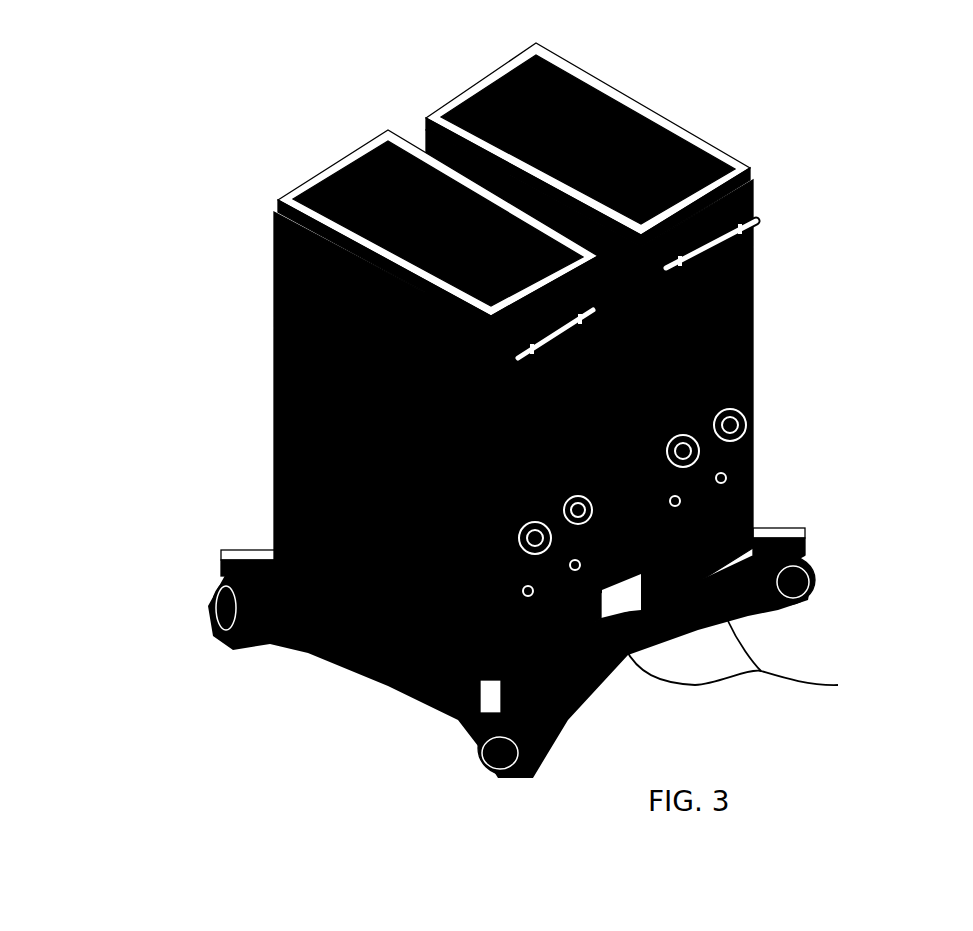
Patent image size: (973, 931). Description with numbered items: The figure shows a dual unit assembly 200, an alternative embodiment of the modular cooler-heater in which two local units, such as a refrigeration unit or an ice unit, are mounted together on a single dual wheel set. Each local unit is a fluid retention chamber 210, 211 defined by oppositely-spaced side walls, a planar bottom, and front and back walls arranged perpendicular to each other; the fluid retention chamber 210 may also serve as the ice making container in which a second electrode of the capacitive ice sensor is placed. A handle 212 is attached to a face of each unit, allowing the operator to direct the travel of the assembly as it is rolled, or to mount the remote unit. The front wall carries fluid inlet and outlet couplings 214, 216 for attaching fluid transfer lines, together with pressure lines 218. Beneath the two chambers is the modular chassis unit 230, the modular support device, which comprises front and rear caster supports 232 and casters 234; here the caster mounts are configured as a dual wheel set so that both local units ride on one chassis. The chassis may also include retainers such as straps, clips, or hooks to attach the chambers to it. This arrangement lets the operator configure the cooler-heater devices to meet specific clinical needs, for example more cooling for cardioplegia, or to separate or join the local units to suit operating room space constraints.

The dual unit assembly 200 is at (504, 406).
The fluid retention chamber 210 is at (345, 165).
The fluid retention chamber 211 is at (695, 326).
The handle 212 is at (745, 235).
The fluid inlet coupling 214 is at (745, 407).
The fluid outlet coupling 216 is at (745, 450).
The pressure line 218 is at (745, 475).
The modular chassis unit 230 is at (492, 604).
The caster support 232 is at (223, 543).
The caster 234 is at (207, 602).